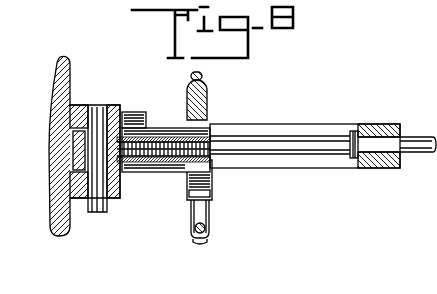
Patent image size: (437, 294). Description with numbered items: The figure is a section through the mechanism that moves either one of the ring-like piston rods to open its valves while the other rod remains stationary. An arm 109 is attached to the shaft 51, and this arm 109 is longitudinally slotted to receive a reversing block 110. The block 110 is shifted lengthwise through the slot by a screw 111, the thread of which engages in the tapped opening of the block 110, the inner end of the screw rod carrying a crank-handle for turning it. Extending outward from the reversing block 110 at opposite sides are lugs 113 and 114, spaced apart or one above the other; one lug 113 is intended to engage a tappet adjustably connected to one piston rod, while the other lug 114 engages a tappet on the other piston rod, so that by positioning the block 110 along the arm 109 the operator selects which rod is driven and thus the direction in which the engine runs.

The shaft 51 is at (97, 213).
The arm 109 is at (324, 168).
The reversing block 110 is at (206, 127).
The screw 111 is at (249, 160).
The lug 113 is at (138, 113).
The lug 114 is at (187, 188).